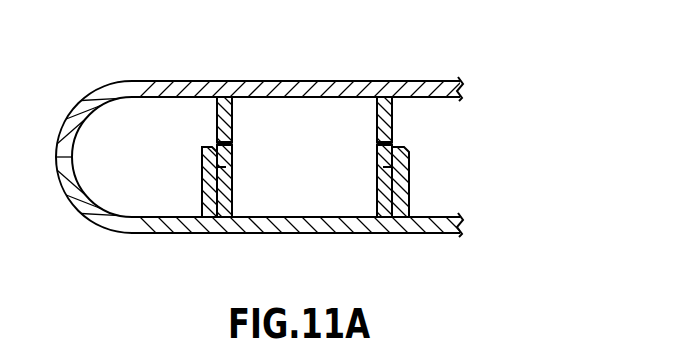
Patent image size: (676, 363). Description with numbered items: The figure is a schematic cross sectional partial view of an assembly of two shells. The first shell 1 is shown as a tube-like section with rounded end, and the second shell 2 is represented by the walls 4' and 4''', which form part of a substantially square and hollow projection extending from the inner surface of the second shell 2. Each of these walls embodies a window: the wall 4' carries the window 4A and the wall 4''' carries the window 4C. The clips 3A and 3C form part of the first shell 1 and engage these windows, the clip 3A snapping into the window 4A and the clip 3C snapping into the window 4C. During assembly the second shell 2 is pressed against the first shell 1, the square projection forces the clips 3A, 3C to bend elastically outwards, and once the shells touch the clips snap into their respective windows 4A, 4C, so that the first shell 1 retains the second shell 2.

The first shell 1 is at (167, 231).
The second shell 2 is at (255, 88).
The wall 4' is at (191, 80).
The wall 4''' is at (365, 80).
The clip 3A is at (210, 183).
The window 4A is at (226, 151).
The window 4C is at (384, 151).
The clip 3C is at (403, 173).